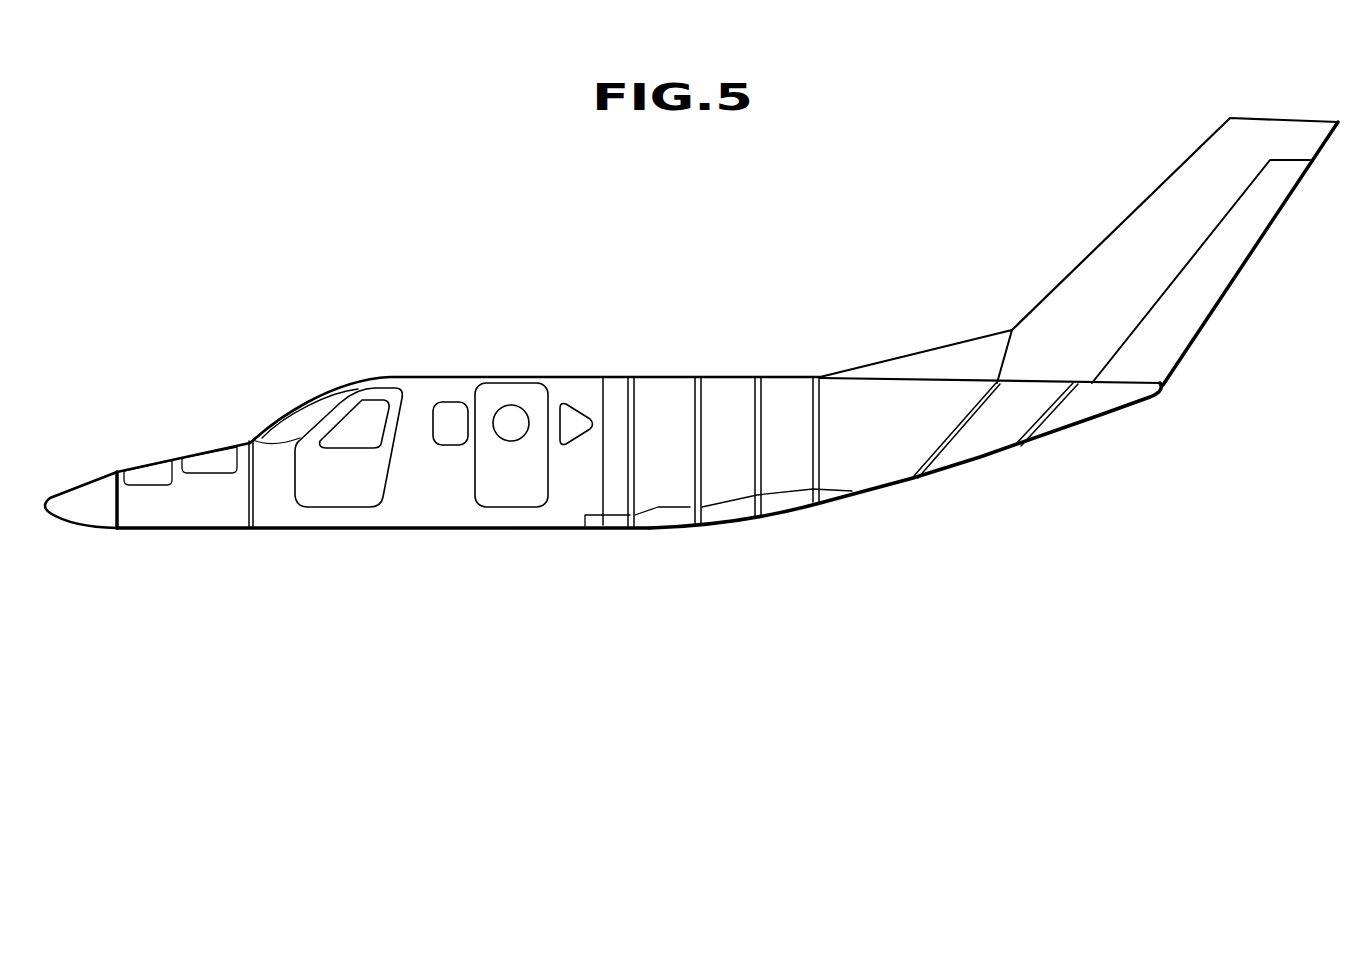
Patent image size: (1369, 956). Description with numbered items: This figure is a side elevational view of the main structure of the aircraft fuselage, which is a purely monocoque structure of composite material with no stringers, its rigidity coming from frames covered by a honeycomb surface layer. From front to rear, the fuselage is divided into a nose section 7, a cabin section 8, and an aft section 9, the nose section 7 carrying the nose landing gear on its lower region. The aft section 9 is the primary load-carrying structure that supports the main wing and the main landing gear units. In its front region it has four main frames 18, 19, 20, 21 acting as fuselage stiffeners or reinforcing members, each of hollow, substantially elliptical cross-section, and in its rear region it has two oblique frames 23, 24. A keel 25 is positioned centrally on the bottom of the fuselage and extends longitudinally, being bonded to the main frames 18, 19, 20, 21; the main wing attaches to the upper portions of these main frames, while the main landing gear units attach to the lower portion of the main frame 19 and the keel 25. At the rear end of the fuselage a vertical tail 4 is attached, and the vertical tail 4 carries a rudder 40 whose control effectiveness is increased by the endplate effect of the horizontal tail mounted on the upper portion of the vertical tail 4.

The vertical tail 4 is at (1155, 207).
The rudder 40 is at (1230, 267).
The nose section 7 is at (178, 538).
The cabin section 8 is at (456, 540).
The aft section 9 is at (887, 504).
The main frame 18 is at (632, 528).
The main frame 19 is at (694, 527).
The main frame 20 is at (758, 517).
The main frame 21 is at (815, 503).
The keel 25 is at (658, 517).
The oblique frame 23 is at (948, 443).
The oblique frame 24 is at (1040, 420).